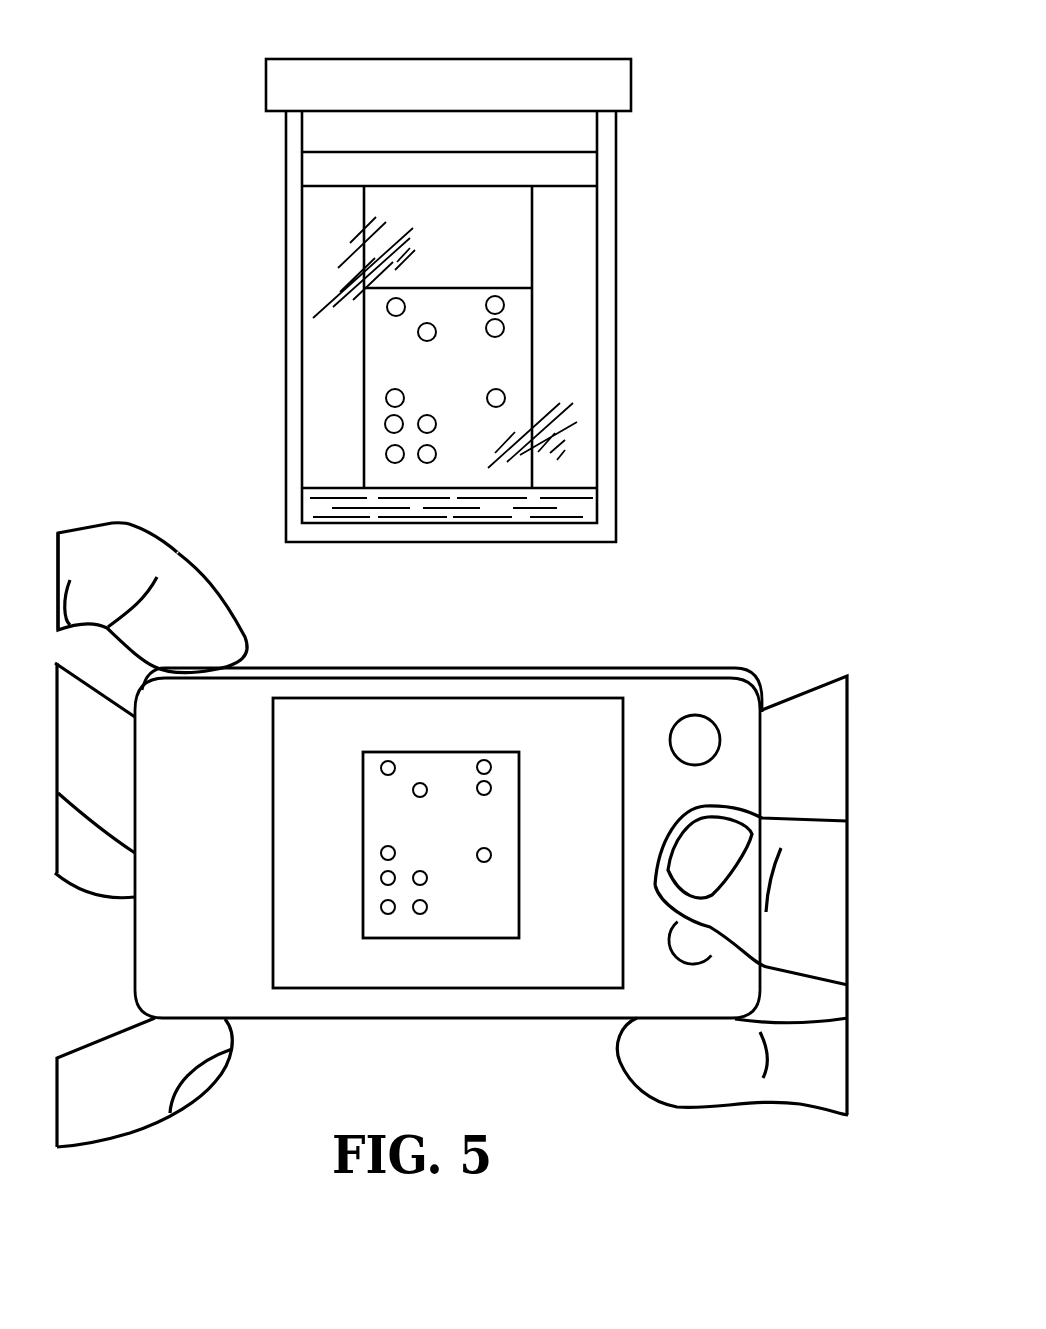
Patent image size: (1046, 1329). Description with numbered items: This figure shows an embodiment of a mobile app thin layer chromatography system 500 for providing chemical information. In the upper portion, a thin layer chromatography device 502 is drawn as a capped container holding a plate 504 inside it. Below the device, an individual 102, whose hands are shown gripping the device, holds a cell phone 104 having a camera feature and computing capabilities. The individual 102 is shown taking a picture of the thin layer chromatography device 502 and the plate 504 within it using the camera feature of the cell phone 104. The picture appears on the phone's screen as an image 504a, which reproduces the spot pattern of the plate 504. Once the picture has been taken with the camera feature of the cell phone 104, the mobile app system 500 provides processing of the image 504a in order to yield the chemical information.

The mobile app thin layer chromatography system 500 is at (460, 278).
The thin layer chromatography device 502 is at (285, 270).
The plate 504 is at (532, 370).
The cell phone 104 is at (465, 805).
The image 504a is at (483, 752).
The individual 102 is at (822, 942).